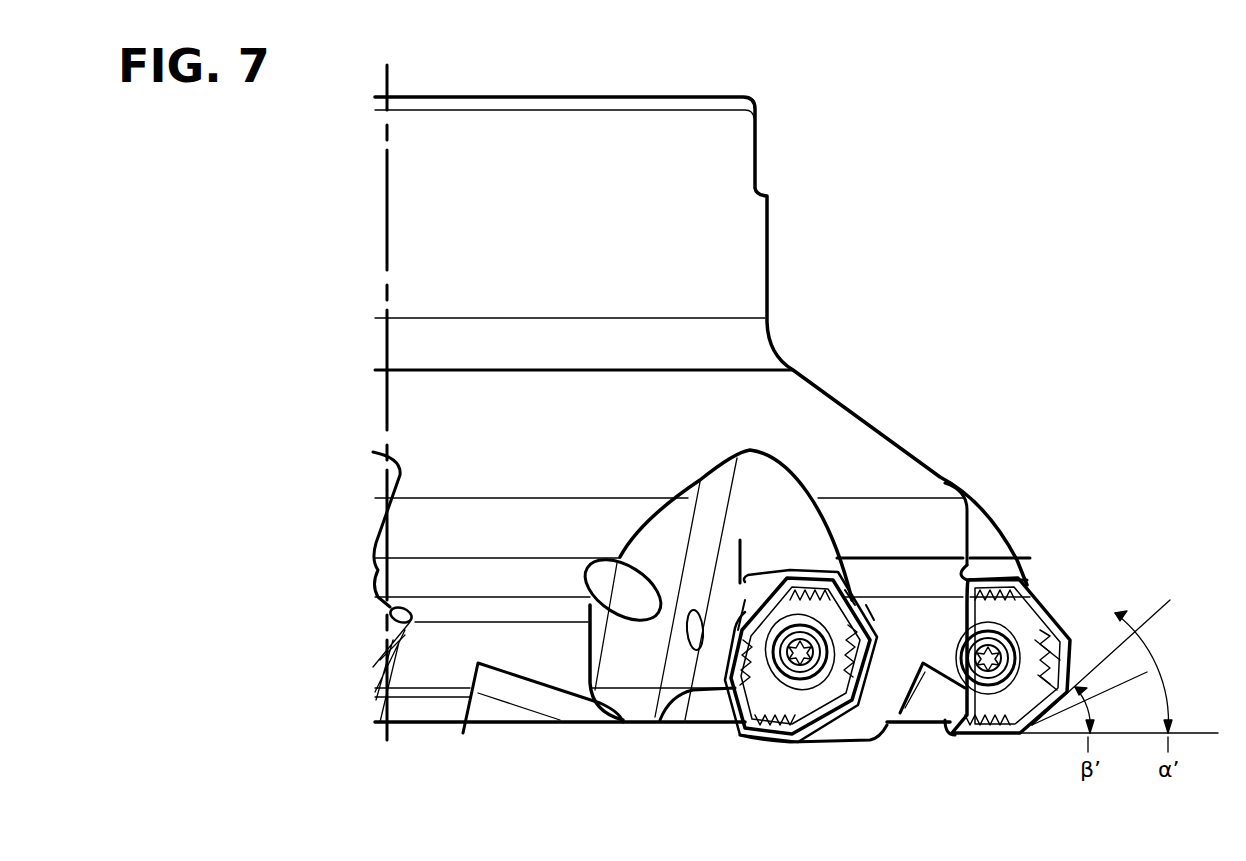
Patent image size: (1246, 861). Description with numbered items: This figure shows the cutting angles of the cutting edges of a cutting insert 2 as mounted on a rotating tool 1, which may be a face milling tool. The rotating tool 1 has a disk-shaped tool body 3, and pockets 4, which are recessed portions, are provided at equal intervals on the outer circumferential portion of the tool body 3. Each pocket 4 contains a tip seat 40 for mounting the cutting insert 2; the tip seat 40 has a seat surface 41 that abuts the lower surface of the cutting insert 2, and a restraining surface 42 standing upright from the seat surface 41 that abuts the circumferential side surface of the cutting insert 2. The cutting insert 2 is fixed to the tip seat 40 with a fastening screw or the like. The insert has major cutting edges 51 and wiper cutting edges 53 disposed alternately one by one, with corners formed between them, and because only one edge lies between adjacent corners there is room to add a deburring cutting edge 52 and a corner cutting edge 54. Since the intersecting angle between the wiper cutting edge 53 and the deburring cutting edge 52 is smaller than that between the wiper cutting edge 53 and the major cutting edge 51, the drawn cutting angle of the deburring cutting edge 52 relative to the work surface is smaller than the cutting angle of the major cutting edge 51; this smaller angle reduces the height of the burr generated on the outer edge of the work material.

The rotating tool 1 is at (681, 855).
The cutting insert 2 is at (727, 702).
The tool body 3 is at (578, 93).
The pocket 4 is at (758, 497).
The tip seat 40 is at (988, 387).
The seat surface 41 is at (870, 612).
The restraining surface 42 is at (735, 635).
The major cutting edge 51 is at (827, 712).
The deburring cutting edge 52 is at (795, 733).
The wiper cutting edge 53 is at (765, 737).
The corner cutting edge 54 is at (752, 733).